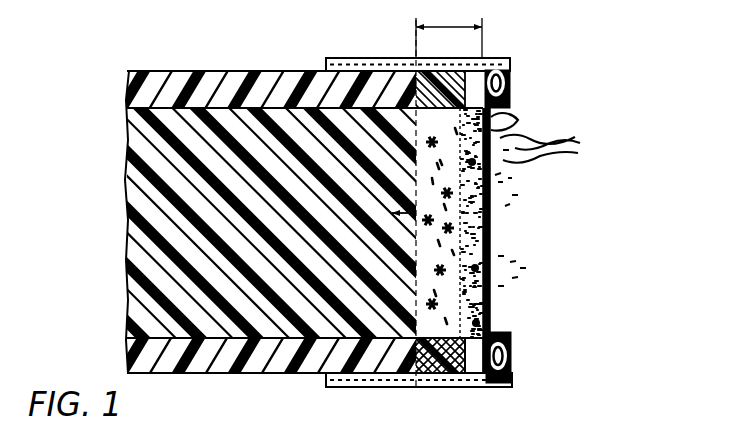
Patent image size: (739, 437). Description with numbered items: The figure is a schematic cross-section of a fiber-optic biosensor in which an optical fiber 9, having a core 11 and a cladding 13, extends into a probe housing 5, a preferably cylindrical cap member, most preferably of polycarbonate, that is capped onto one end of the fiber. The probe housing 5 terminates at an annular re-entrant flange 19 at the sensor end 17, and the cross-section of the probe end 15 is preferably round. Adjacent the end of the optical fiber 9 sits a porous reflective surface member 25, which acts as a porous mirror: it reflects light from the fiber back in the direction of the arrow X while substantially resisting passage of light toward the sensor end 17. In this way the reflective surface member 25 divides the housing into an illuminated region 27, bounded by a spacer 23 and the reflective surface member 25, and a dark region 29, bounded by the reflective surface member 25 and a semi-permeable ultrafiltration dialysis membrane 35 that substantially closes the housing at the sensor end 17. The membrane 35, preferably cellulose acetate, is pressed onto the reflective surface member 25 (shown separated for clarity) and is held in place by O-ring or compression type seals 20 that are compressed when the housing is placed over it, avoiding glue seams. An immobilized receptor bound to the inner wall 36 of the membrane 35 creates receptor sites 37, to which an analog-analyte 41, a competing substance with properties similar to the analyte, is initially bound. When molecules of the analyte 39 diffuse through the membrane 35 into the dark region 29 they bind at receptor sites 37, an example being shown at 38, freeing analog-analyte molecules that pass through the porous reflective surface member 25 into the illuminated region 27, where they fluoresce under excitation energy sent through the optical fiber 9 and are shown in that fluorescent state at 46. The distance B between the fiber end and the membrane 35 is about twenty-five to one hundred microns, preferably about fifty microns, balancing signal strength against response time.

The probe housing 5 is at (355, 395).
The optical fiber 9 is at (206, 378).
The core 11 is at (142, 150).
The cladding 13 is at (206, 72).
The probe end 15 is at (447, 386).
The sensor end 17 is at (509, 60).
The annular re-entrant flange 19 is at (513, 97).
The seals 20 is at (505, 81).
The spacer 23 is at (437, 73).
The porous reflective surface member 25 is at (457, 360).
The illuminated region 27 is at (492, 309).
The dark region 29 is at (483, 386).
The ultrafiltration dialysis membrane 35 is at (490, 236).
The inner wall 36 is at (487, 250).
The receptor sites 37 is at (525, 119).
The analyte bound at receptor site 38 is at (493, 190).
The analyte 39 is at (552, 153).
The analog-analyte 41 is at (493, 279).
The fluorescent analog-analyte molecules 46 is at (476, 214).
The distance B is at (449, 29).
The arrow X is at (392, 214).